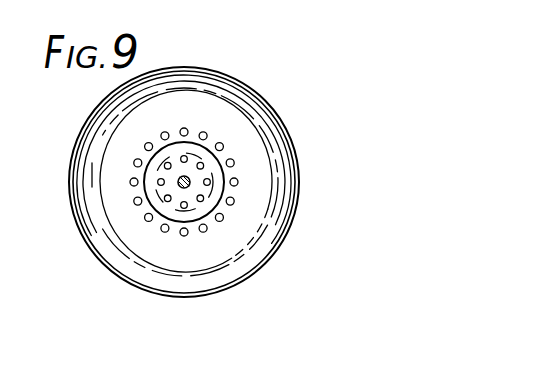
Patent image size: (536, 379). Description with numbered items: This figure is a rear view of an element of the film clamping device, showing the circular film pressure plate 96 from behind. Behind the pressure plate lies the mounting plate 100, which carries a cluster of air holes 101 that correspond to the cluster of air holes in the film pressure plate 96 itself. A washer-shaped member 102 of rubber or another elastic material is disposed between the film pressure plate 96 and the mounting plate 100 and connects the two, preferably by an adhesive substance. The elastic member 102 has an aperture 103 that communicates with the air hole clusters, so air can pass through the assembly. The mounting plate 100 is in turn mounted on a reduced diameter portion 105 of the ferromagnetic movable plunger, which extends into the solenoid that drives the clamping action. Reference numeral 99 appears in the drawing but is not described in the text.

The film pressure plate 96 is at (250, 88).
The outer apertures 99 is at (186, 127).
The mounting plate 100 is at (210, 216).
The air holes 101 is at (166, 163).
The washer-shaped member 102 is at (218, 157).
The aperture 103 is at (130, 191).
The reduced diameter portion 105 is at (190, 185).